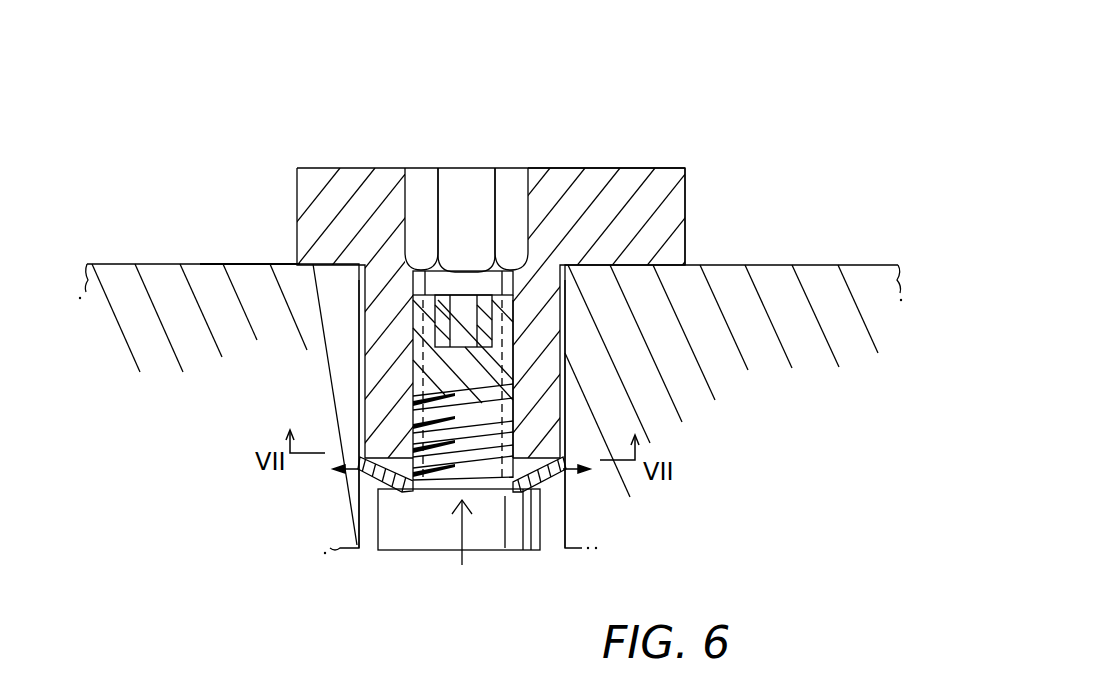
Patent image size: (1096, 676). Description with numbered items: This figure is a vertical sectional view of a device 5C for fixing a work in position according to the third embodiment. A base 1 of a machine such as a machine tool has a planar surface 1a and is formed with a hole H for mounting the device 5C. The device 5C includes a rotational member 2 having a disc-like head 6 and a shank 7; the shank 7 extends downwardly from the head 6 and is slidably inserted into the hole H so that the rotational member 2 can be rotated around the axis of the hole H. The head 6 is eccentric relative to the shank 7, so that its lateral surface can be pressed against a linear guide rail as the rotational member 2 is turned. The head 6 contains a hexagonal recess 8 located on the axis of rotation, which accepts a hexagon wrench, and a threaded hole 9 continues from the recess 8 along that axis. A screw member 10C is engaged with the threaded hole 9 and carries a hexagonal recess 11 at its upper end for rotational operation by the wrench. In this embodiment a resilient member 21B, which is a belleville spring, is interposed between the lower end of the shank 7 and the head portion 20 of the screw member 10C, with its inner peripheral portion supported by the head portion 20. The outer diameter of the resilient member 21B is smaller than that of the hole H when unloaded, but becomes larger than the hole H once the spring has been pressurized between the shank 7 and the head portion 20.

The base 1 is at (162, 263).
The planar surface 1a is at (240, 260).
The hole H is at (357, 528).
The rotational member 2 is at (343, 165).
The device 5C is at (504, 257).
The disc-like head 6 is at (670, 210).
The shank 7 is at (540, 367).
The hexagonal recess 8 is at (493, 212).
The threaded hole 9 is at (412, 368).
The screw member 10C is at (513, 418).
The hexagonal recess 11 is at (447, 318).
The head portion 20 is at (427, 537).
The resilient member 21B is at (528, 484).